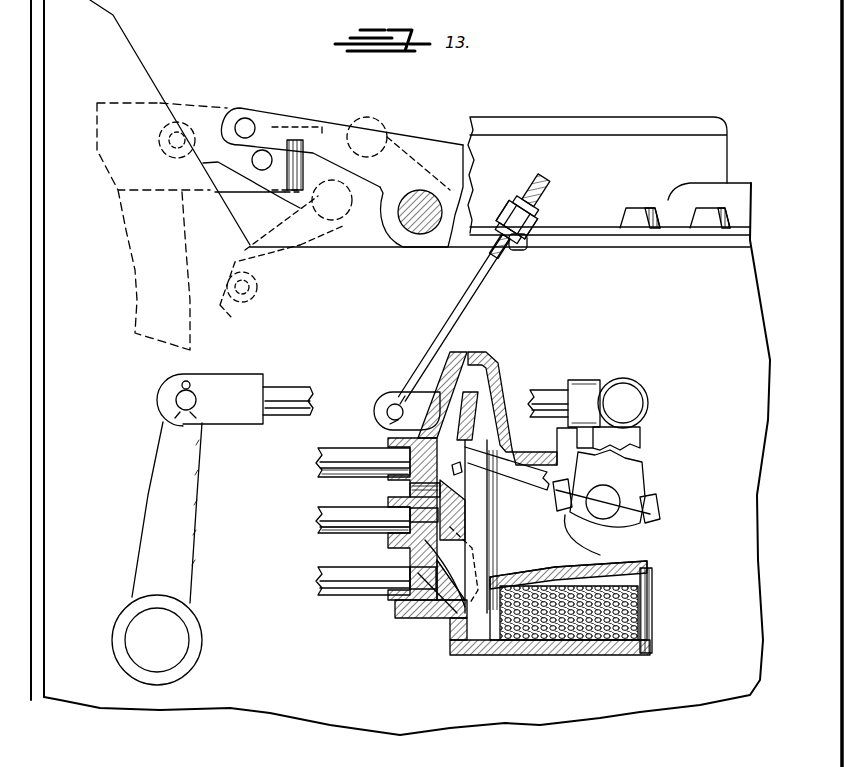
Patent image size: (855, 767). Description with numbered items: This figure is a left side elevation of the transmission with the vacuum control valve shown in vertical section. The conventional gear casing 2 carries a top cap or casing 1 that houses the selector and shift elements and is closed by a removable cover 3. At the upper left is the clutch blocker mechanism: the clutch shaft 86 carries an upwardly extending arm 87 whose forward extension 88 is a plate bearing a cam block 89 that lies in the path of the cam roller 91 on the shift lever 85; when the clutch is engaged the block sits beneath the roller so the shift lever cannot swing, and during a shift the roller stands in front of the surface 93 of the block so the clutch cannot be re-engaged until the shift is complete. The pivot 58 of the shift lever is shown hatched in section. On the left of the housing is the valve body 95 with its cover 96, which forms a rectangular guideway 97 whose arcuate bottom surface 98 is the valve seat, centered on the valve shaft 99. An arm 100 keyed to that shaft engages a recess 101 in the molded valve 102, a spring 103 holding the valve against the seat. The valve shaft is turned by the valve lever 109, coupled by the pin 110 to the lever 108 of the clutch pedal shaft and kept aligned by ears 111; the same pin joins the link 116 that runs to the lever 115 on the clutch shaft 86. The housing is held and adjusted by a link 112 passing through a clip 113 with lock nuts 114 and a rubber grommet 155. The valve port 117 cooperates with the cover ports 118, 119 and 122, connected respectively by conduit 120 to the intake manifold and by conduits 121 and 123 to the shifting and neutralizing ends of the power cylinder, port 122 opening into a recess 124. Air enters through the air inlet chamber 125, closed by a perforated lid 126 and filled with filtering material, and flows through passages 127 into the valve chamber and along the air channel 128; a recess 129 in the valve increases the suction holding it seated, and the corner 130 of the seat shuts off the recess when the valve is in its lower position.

The cap or casing 1 is at (703, 165).
The gear casing 2 is at (707, 317).
The cover 3 is at (700, 128).
The pivot pin 58 is at (420, 225).
The shift lever 85 is at (423, 147).
The clutch shaft 86 is at (172, 642).
The arm 87 is at (133, 247).
The forward extension 88 is at (183, 115).
The cam block 89 is at (257, 173).
The cam roller 91 is at (380, 117).
The surface of the block 93 is at (330, 125).
The valve body 95 is at (503, 405).
The cover 96 is at (457, 632).
The valve guideway or channel 97 is at (410, 447).
The bottom surface 98 is at (437, 509).
The valve shaft 99 is at (607, 510).
The arm 100 is at (515, 507).
The recess 101 is at (433, 477).
The valve 102 is at (440, 530).
The spring 103 is at (462, 467).
The lever 108 is at (627, 441).
The lever 109 is at (637, 476).
The pin 110 is at (628, 405).
The ears 111 is at (703, 531).
The link 112 is at (457, 312).
The bracket or clip 113 is at (487, 215).
The lock nuts 114 is at (513, 197).
The lever 115 is at (183, 552).
The link 116 is at (584, 388).
The port 117 is at (460, 420).
The port 118 is at (417, 540).
The port 119 is at (407, 482).
The conduit means 120 is at (343, 518).
The conduit 121 is at (335, 467).
The third port 122 is at (423, 598).
The conduit 123 is at (340, 581).
The recess 124 is at (432, 596).
The air inlet chamber 125 is at (610, 652).
The perforated lid 126 is at (643, 617).
The passages 127 is at (569, 613).
The port or channel 128 is at (450, 365).
The recess 129 is at (443, 510).
The corner 130 is at (457, 603).
The rubber grommet or washer structure 155 is at (537, 222).